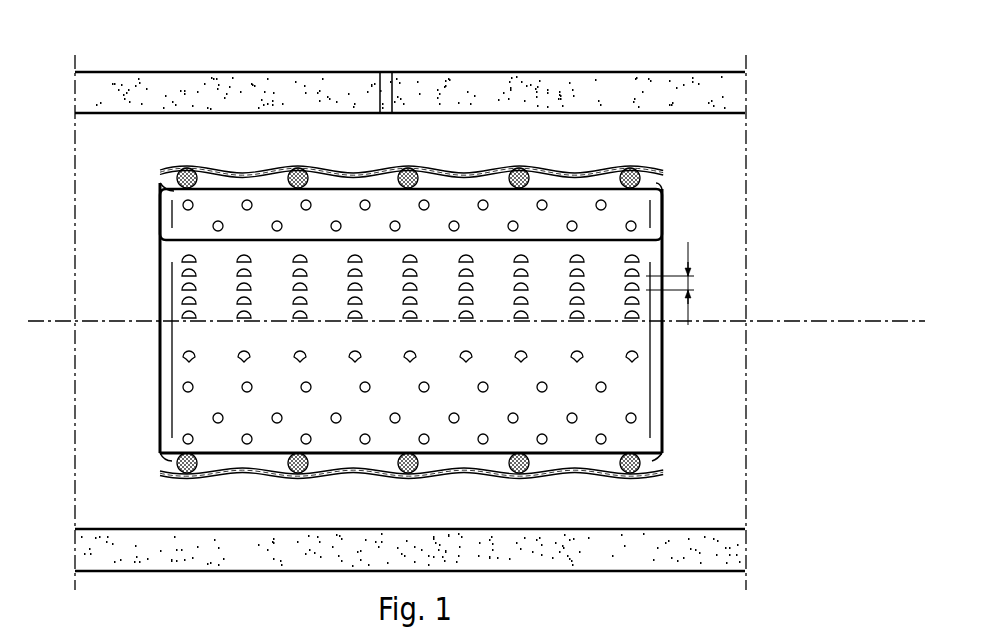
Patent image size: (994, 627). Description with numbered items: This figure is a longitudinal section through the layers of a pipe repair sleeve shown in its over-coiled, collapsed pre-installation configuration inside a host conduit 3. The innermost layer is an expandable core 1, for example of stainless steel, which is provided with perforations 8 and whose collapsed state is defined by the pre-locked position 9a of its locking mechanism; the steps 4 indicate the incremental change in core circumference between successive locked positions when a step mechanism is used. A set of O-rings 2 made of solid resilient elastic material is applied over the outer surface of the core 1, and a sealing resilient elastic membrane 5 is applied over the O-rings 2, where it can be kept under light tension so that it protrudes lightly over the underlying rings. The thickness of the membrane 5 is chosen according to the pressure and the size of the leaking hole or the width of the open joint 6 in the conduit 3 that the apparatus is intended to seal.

The expandable core 1 is at (667, 197).
The O-rings 2 is at (423, 171).
The conduit 3 is at (527, 90).
The steps 4 is at (690, 282).
The sealing resilient membrane 5 is at (372, 166).
The open joint 6 is at (388, 90).
The perforations 8 is at (185, 390).
The pre-locked position 9a is at (645, 360).